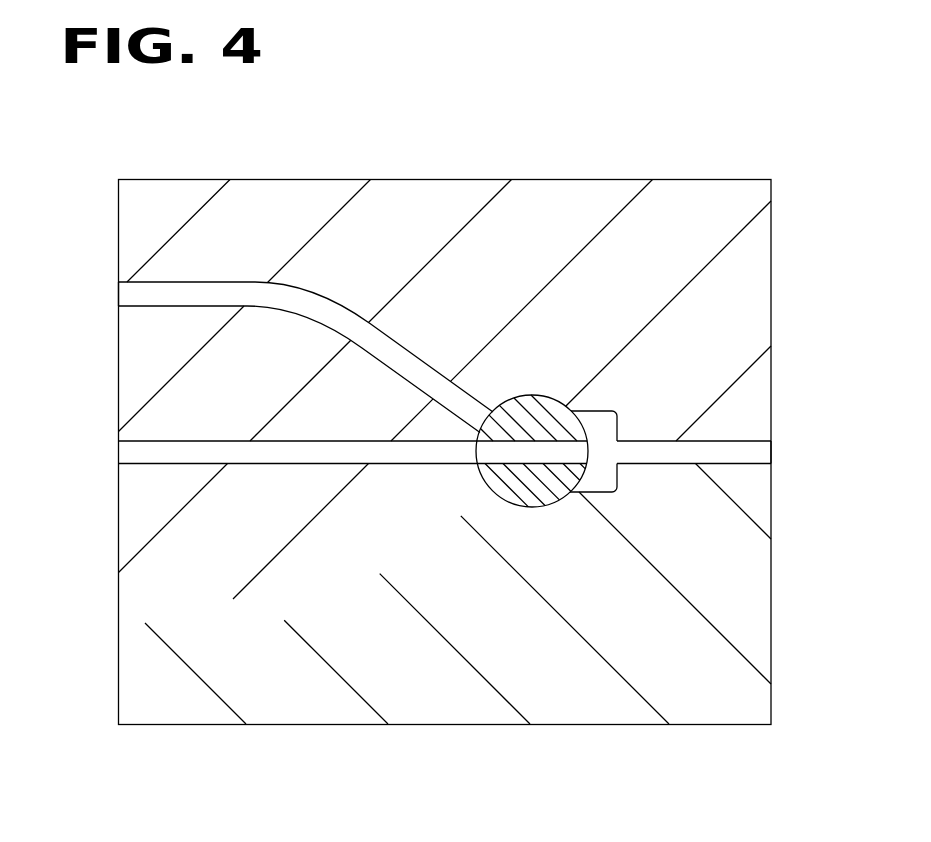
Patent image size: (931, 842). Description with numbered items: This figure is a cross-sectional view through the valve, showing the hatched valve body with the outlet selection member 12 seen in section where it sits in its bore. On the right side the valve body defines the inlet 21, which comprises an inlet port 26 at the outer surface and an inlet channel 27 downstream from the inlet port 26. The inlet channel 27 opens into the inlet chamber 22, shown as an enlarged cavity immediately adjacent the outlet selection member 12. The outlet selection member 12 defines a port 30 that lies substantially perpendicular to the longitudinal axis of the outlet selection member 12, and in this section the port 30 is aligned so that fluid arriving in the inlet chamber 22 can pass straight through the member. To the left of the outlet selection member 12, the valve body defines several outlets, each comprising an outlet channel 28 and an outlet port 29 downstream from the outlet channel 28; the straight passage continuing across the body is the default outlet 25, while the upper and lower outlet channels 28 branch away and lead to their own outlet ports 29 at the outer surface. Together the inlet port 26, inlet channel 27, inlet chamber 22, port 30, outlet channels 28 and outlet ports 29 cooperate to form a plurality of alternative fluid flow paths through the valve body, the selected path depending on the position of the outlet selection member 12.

The outlet selection member 12 is at (492, 482).
The inlet 21 is at (723, 448).
The inlet chamber 22 is at (603, 485).
The default outlet 25 is at (182, 452).
The inlet port 26 is at (772, 450).
The inlet channel 27 is at (630, 448).
The outlet channel 28 is at (203, 293).
The outlet port 29 is at (118, 293).
The port 30 is at (528, 453).